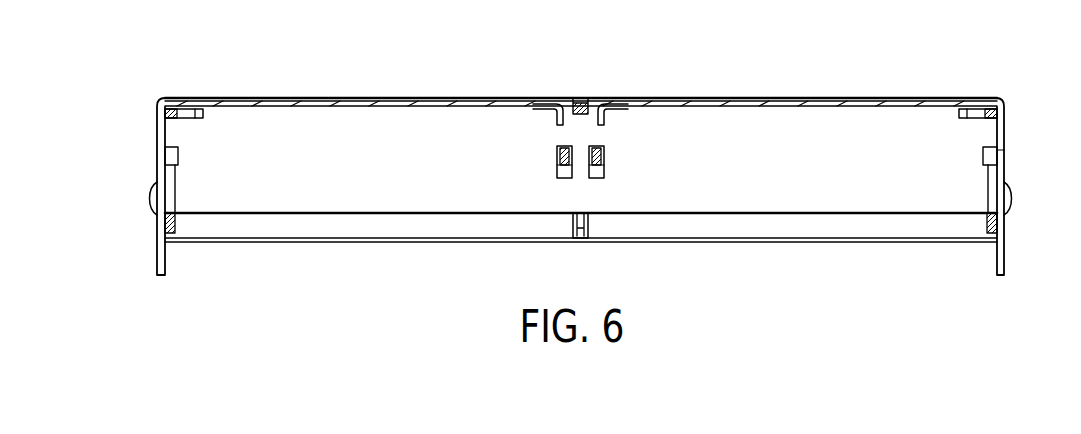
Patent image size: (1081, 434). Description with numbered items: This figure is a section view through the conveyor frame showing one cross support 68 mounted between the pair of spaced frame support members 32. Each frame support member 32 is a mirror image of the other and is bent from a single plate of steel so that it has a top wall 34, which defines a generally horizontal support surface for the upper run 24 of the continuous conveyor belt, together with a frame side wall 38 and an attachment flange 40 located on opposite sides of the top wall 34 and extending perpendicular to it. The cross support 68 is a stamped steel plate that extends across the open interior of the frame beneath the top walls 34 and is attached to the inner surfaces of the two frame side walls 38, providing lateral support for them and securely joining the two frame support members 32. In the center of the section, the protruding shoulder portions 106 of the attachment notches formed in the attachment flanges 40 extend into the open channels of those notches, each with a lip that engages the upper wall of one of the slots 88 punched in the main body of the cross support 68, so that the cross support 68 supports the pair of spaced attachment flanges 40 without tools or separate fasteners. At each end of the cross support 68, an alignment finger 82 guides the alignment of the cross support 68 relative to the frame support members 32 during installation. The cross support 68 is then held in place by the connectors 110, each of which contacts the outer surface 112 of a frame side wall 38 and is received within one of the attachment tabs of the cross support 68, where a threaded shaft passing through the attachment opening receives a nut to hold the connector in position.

The upper run 24 is at (232, 98).
The top wall 34 is at (371, 103).
The attachment flange 40 is at (556, 123).
The cross support 68 is at (893, 130).
The alignment finger 82 is at (182, 137).
The protruding shoulder portion 106 is at (558, 148).
The slots 88 is at (560, 172).
The frame support member 32 is at (336, 183).
The frame side wall 38 is at (157, 265).
The connectors 110 is at (153, 196).
The outer surface 112 is at (1004, 156).